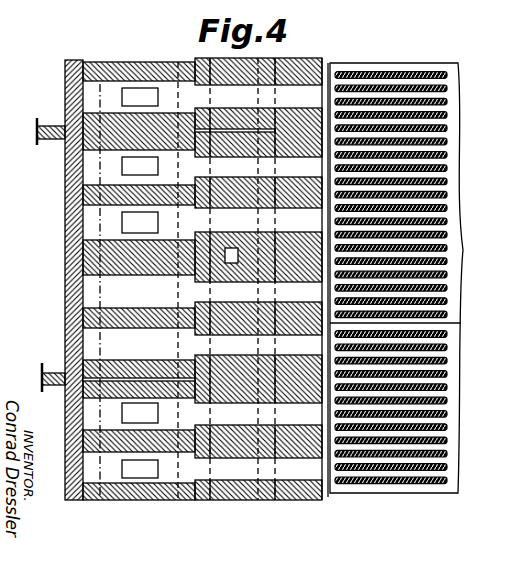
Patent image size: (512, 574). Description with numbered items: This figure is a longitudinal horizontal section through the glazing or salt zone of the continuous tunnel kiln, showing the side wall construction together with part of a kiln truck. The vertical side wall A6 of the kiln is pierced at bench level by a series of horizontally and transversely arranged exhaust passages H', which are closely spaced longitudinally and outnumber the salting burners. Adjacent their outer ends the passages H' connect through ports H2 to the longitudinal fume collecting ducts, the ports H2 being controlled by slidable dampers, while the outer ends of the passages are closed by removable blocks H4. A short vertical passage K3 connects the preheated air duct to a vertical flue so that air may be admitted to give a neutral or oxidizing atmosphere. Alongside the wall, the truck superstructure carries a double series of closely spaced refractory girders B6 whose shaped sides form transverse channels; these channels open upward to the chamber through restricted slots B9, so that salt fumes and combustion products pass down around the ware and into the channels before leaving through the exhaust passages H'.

The vertical side wall A6 is at (65, 113).
The removable block H4 is at (65, 213).
The exhaust passage H' is at (258, 279).
The port H2 is at (139, 281).
The short vertical passage K3 is at (233, 264).
The refractory girder B6 is at (410, 86).
The restricted slot B9 is at (437, 259).